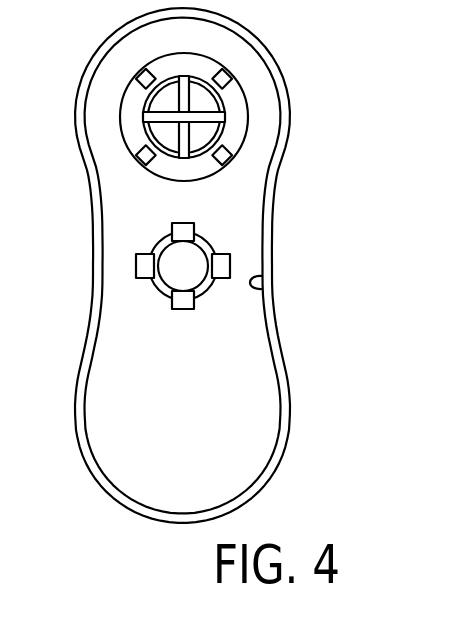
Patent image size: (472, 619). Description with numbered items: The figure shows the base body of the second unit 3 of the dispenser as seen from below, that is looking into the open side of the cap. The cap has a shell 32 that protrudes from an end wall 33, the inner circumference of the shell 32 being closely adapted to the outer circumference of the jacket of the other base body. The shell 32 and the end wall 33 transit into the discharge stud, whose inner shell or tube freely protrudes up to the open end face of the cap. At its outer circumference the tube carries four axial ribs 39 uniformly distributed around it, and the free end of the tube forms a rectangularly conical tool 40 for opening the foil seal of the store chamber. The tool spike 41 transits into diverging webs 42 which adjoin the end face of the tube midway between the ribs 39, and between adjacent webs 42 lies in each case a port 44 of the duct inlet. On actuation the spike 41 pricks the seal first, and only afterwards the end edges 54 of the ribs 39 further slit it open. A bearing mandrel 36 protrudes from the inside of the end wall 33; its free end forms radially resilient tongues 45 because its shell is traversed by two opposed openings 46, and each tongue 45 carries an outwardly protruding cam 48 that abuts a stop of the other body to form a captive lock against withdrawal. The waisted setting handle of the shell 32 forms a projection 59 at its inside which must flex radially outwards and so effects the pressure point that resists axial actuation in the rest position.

The second unit 3 is at (215, 261).
The shell 32 is at (283, 382).
The end wall 33 is at (262, 435).
The bearing mandrel 36 is at (157, 292).
The axial ribs 39 is at (227, 165).
The conical tool 40 is at (172, 116).
The tool spike 41 is at (188, 117).
The diverging webs 42 is at (182, 135).
The port 44 is at (160, 130).
The radially resilient tongues 45 is at (207, 295).
The openings 46 is at (175, 228).
The cam 48 is at (136, 262).
The end edges 54 is at (215, 146).
The projection 59 is at (262, 281).